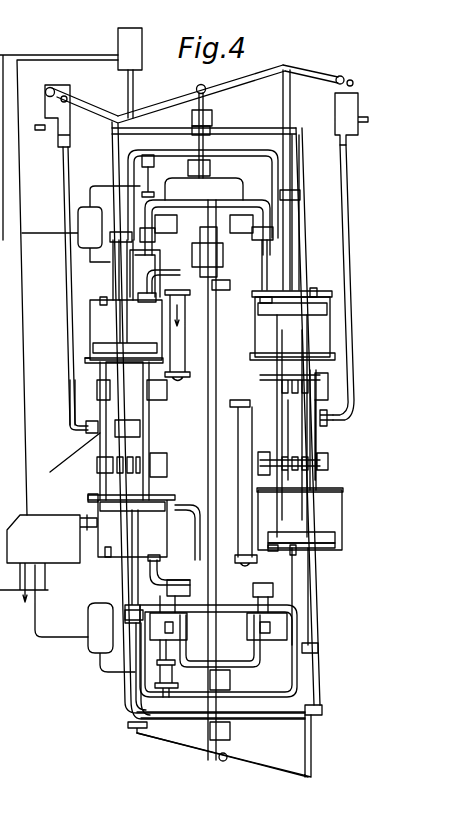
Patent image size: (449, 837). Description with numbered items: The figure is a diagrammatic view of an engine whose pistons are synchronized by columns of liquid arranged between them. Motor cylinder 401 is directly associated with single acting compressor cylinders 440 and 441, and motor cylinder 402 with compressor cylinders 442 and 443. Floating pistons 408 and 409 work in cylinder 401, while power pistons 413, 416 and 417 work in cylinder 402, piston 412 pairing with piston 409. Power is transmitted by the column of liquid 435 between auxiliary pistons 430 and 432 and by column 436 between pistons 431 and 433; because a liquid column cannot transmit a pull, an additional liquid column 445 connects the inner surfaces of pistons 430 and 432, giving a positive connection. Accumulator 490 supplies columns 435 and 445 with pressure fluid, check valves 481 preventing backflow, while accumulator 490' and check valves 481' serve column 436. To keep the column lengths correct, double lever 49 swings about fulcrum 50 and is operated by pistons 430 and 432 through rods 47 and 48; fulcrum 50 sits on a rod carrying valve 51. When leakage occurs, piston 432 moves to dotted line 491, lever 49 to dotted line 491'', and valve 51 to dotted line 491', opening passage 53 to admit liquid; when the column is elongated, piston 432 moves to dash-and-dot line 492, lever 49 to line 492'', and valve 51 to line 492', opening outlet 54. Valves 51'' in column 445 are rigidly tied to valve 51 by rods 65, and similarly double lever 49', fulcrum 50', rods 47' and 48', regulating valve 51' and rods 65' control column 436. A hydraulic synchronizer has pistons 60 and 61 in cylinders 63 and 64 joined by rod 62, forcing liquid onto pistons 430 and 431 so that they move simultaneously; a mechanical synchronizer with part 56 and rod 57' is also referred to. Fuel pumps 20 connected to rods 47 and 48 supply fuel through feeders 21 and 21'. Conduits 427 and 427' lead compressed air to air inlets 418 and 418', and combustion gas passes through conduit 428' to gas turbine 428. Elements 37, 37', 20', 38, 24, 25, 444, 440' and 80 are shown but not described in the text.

The fuel pump 20 is at (46, 116).
The cable 37 is at (85, 99).
The double lever 49 is at (201, 94).
The fulcrum 50 is at (186, 84).
The dotted line position of lever 49 491'' is at (310, 62).
The pulley 37' is at (345, 72).
The weight device 20' is at (358, 256).
The stem 38 is at (70, 108).
The check valve 481 is at (179, 215).
The rod 47 is at (195, 427).
The rod 65 is at (160, 168).
The outlet 54 is at (210, 680).
The dotted line position of valve 51 491' is at (220, 135).
The regulating valve 51 is at (223, 128).
The column of liquid 435 is at (262, 125).
The dash and dot line position of lever 49 492'' is at (224, 163).
The rod 48 is at (303, 404).
The dotted line position of piston 432 491 is at (307, 180).
The auxiliary piston 432 is at (300, 194).
The dash and dot line position of piston 432 492 is at (312, 212).
The dash and dot line position of valve 51 492' is at (207, 205).
The accumulator 490 is at (81, 224).
The liquid column 445 is at (226, 242).
The auxiliary piston 430 is at (112, 243).
The inlet valve 24 is at (102, 297).
The outlet valve 25 is at (148, 302).
The power piston 416 is at (328, 308).
The single acting compressor cylinder 442 is at (330, 325).
The single acting compressor cylinder 440 is at (98, 301).
The cylinder 63 is at (173, 287).
The piston 60 is at (178, 340).
The valve 51'' is at (219, 444).
The conduit 427 is at (231, 480).
The rod 62 is at (207, 338).
The single acting compressor cylinder 441 is at (90, 355).
The motor cylinder 401 is at (102, 378).
The piston 408 is at (124, 431).
The air inlet 418 is at (63, 402).
The power piston 413 is at (310, 363).
The air inlet 418' is at (348, 386).
The motor cylinder 402 is at (352, 407).
The feeder 21' is at (341, 431).
The piston 409 is at (128, 446).
The synchronizer part 56 is at (112, 437).
The conduit 427' is at (249, 483).
The feeder 21 is at (67, 463).
The connecting rod 57' is at (96, 491).
The cylinder 444 is at (300, 495).
The gas turbine 428 is at (48, 576).
The piston 412 is at (132, 515).
The conduit 428' is at (189, 532).
The cylinder 64 is at (204, 570).
The single acting compressor cylinder 443 is at (295, 540).
The piston 417 is at (310, 553).
The check valve 481' is at (224, 637).
The accumulator 490' is at (97, 637).
The piston 431 is at (125, 618).
The piston 61 is at (179, 618).
The valve 440' is at (255, 618).
The rod 65' is at (218, 651).
The rod 47' is at (125, 669).
The cylinder 80 is at (178, 690).
The piston 433 is at (320, 665).
The passage 53 is at (210, 728).
The column of liquid 436 is at (275, 718).
The rod 48' is at (241, 746).
The fulcrum 50' is at (229, 768).
The double lever 49' is at (222, 764).
The regulating valve 51' is at (266, 750).